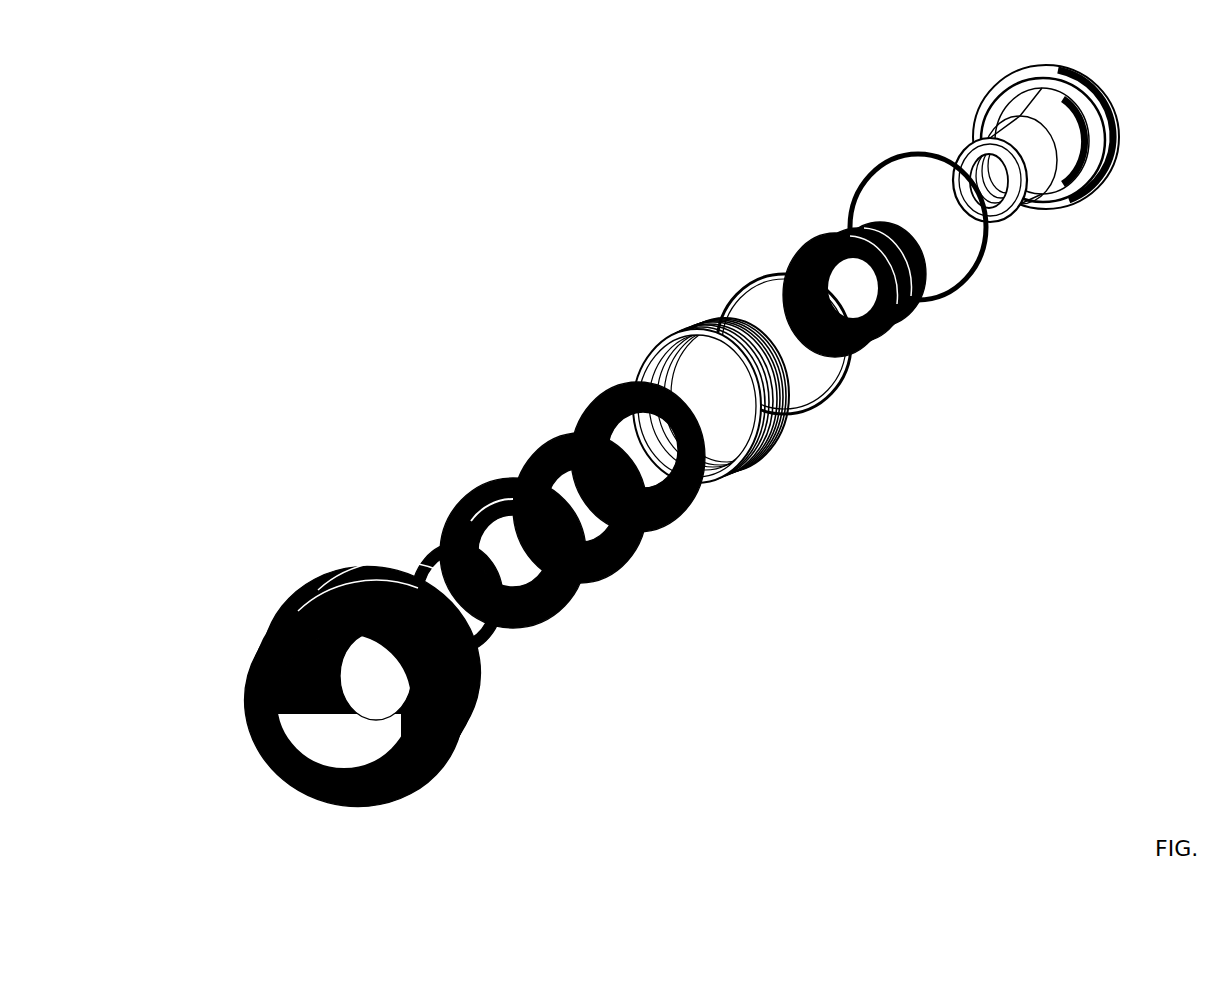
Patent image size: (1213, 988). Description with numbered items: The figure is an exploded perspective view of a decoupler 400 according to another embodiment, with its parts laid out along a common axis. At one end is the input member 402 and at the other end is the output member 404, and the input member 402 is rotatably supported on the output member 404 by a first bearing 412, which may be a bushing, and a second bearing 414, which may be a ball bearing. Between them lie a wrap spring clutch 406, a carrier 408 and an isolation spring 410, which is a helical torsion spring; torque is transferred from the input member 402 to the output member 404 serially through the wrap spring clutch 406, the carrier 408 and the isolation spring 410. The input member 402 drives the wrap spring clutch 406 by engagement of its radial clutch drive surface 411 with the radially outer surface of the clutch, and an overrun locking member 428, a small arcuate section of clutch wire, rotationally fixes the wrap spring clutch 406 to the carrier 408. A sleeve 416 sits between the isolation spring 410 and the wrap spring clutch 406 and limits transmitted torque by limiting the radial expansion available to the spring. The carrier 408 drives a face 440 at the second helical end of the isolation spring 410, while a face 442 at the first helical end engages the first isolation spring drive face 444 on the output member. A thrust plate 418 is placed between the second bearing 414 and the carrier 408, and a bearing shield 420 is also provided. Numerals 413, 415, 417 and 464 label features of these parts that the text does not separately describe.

The decoupler 400 is at (530, 263).
The input member 402 is at (355, 615).
The output member 404 is at (1077, 179).
The wrap spring clutch 406 is at (734, 408).
The carrier 408 is at (681, 511).
The isolation spring 410 is at (865, 278).
The clutch drive surface 411 is at (310, 675).
The first bearing 412 is at (973, 250).
The interior passage 413 is at (328, 715).
The second bearing 414 is at (556, 613).
The external threads 415 is at (361, 558).
The sleeve 416 is at (813, 388).
The threaded bore 417 is at (988, 185).
The thrust plate 418 is at (611, 548).
The bearing shield 420 is at (491, 638).
The overrun locking member 428 is at (745, 411).
The face at second helical end of isolation spring 440 is at (855, 228).
The face at first helical end of isolation spring 442 is at (871, 211).
The first isolation spring drive face 444 is at (1047, 90).
The rim 464 is at (1100, 170).